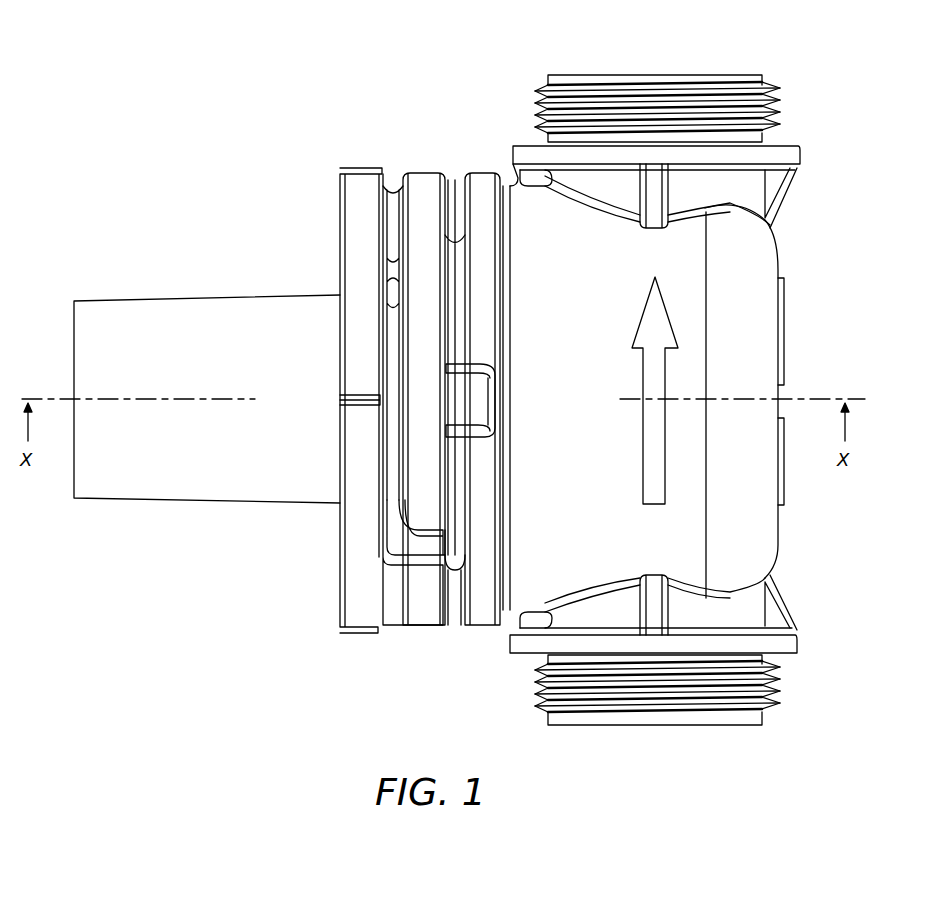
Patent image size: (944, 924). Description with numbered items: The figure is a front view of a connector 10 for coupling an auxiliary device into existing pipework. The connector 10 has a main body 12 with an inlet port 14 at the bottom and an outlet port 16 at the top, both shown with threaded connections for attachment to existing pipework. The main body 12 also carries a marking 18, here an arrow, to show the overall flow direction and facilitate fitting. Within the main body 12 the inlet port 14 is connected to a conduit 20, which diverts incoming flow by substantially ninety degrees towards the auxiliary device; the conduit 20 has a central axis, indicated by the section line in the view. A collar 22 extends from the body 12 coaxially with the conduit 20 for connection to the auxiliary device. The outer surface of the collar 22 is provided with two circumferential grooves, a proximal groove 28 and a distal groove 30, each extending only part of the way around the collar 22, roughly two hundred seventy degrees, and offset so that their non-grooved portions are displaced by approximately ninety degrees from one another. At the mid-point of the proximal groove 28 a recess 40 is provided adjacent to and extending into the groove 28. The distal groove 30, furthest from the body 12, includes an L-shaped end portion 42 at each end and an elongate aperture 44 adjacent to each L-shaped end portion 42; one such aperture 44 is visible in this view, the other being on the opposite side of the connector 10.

The connector 10 is at (299, 124).
The main body 12 is at (770, 262).
The inlet port 14 is at (654, 727).
The outlet port 16 is at (656, 75).
The marking 18 is at (652, 312).
The conduit 20 is at (190, 300).
The collar 22 is at (352, 197).
The proximal groove 28 is at (457, 172).
The distal groove 30 is at (396, 170).
The recess 40 is at (487, 382).
The L-shaped end portion 42 is at (388, 548).
The elongate aperture 44 is at (385, 462).